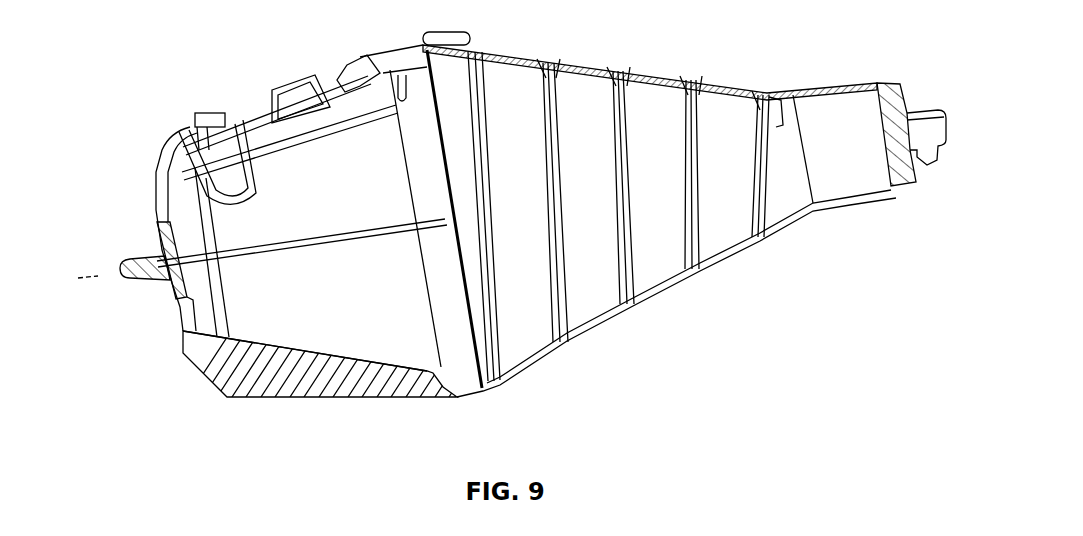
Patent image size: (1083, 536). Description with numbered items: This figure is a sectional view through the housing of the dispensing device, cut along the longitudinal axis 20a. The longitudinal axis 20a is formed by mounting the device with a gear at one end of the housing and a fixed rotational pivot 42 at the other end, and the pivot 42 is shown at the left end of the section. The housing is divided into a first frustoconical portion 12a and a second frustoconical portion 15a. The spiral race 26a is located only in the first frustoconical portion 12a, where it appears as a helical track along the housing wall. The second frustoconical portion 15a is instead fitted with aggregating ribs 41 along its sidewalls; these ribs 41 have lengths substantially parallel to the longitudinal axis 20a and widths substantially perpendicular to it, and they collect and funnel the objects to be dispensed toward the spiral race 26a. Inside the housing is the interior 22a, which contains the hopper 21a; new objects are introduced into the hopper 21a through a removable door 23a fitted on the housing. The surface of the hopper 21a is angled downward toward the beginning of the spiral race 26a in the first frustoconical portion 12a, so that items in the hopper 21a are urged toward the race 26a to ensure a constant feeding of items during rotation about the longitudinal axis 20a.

The first frustoconical portion 12a is at (660, 297).
The second frustoconical portion 15a is at (293, 399).
The longitudinal axis 20a is at (958, 127).
The hopper 21a is at (355, 334).
The interior 22a is at (517, 343).
The removable door 23a is at (283, 86).
The spiral race 26a is at (673, 83).
The aggregating ribs 41 is at (293, 242).
The fixed rotational pivot 42 is at (147, 281).